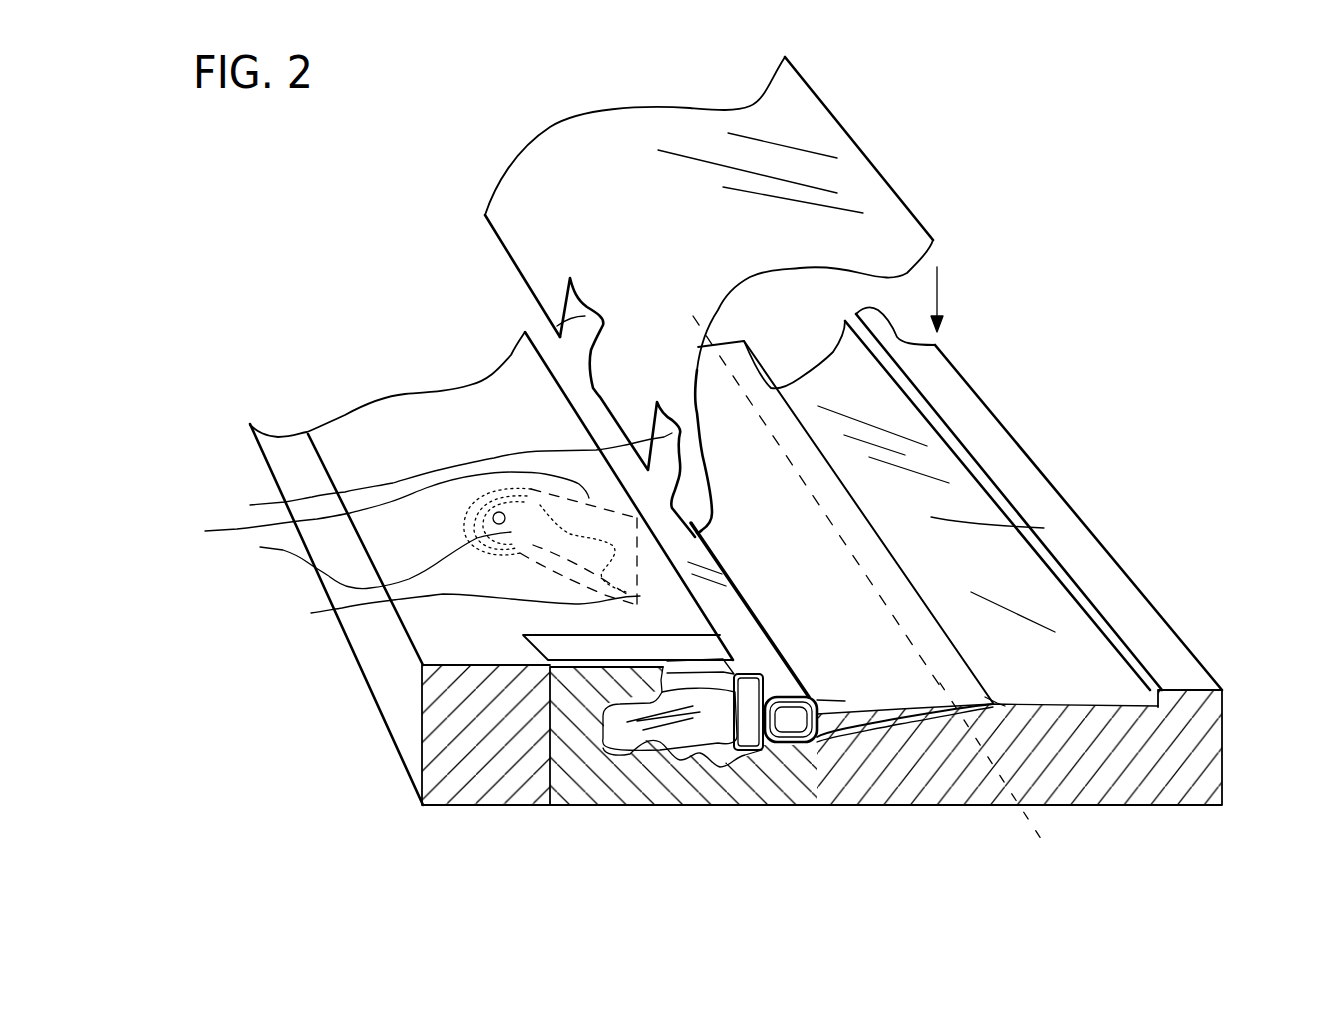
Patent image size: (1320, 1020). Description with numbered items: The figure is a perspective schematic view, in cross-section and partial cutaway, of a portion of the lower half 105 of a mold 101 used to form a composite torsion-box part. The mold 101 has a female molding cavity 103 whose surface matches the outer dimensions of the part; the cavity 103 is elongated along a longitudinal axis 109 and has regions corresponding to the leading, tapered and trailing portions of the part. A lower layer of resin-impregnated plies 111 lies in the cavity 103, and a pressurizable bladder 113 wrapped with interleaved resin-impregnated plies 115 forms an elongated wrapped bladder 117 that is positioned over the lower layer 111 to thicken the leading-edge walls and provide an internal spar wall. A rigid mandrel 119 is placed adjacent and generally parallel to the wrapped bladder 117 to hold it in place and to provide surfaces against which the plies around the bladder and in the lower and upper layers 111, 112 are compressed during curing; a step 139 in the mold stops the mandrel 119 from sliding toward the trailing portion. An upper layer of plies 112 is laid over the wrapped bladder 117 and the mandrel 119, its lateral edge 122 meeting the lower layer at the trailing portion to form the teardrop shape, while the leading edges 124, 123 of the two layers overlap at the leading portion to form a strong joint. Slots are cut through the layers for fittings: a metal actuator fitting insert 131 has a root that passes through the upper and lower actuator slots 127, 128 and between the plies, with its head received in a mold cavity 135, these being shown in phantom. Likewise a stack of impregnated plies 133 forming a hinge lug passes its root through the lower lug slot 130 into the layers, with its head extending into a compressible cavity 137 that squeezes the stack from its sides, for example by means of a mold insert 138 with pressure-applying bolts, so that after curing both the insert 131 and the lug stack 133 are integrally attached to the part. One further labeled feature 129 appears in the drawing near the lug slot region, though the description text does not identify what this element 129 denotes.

The mold 101 is at (1033, 393).
The female molding cavity 103 is at (1007, 523).
The lower half 105 is at (1213, 747).
The longitudinal axis 109 is at (876, 585).
The lower layer of plies 111 is at (777, 745).
The upper layer of plies 112 is at (870, 188).
The pressurizable bladder 113 is at (762, 750).
The resin-impregnated plies 115 is at (790, 742).
The wrapped bladder 117 is at (840, 727).
The rigid mandrel 119 is at (847, 710).
The lateral edge 122 is at (830, 107).
The leading edge 123 is at (672, 700).
The leading edge 124 is at (521, 265).
The upper actuator slot 127 is at (546, 309).
The lower actuator slot 128 is at (452, 611).
The sheet 129 is at (438, 476).
The lower lug slot 130 is at (663, 672).
The metal actuator fitting insert 131 is at (426, 547).
The stack of impregnated plies 133 is at (553, 643).
The actuator insert cavity 135 is at (393, 532).
The compressible cavity 137 is at (640, 743).
The mold insert 138 is at (733, 677).
The step 139 is at (997, 703).